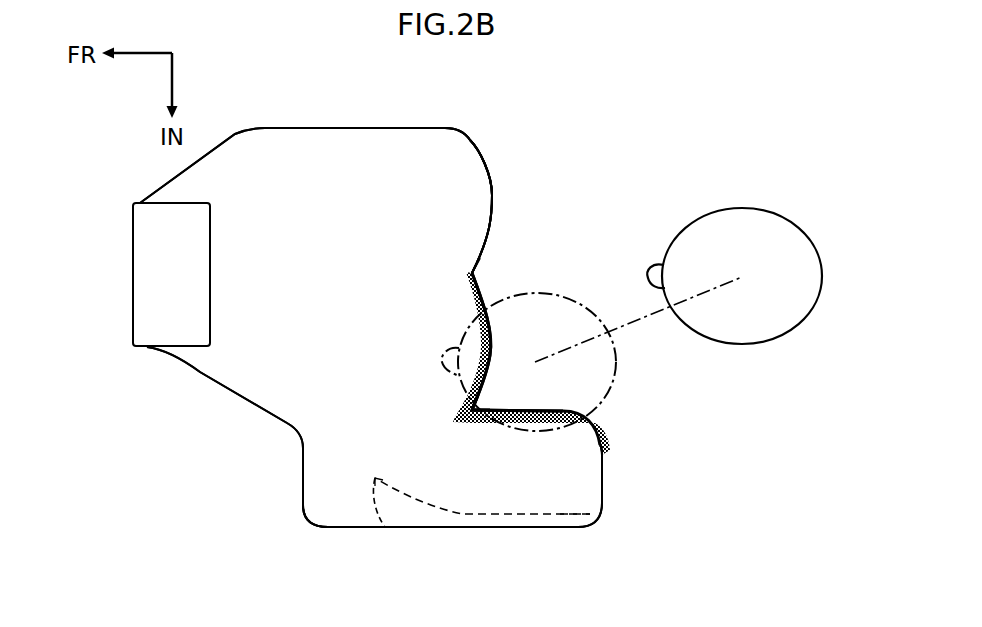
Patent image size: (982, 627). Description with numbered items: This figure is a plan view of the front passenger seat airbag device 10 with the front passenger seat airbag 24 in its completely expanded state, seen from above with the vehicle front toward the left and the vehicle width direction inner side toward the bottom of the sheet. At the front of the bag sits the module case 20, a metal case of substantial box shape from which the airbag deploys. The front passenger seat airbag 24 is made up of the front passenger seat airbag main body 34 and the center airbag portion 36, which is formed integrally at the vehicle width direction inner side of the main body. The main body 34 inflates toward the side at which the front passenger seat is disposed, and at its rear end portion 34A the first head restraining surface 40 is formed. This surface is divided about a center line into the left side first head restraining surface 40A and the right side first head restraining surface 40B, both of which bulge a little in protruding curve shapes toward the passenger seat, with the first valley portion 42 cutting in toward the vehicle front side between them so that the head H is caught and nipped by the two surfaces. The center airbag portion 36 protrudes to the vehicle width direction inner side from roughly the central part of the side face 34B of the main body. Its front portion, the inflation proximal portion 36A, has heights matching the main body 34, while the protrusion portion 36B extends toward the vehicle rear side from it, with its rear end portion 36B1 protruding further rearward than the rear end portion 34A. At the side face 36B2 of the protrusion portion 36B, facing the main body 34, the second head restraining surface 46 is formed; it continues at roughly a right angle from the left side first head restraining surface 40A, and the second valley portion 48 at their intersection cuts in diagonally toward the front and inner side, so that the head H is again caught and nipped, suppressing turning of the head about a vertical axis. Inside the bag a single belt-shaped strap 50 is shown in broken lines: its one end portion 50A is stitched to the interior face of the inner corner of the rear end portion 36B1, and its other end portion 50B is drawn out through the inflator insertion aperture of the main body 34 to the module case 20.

The front passenger seat airbag device 10 is at (108, 190).
The module case 20 is at (133, 284).
The front passenger seat airbag 24 is at (493, 126).
The front passenger seat airbag main body 34 is at (387, 124).
The rear end portion 34A is at (483, 157).
The side face 34B is at (228, 388).
The center airbag portion 36 is at (606, 497).
The inflation proximal portion 36A is at (330, 508).
The protrusion portion 36B is at (548, 498).
The rear end portion 36B1 is at (603, 468).
The side face 36B2 is at (545, 410).
The first head restraining surface 40 is at (600, 160).
The left side first head restraining surface 40A is at (492, 332).
The right side first head restraining surface 40B is at (492, 187).
The first valley portion 42 is at (472, 273).
The second head restraining surface 46 is at (515, 408).
The second valley portion 48 is at (478, 408).
The strap 50 is at (462, 516).
The one length direction end portion 50A is at (585, 517).
The another length direction end portion 50B is at (385, 528).
The head H is at (543, 293).